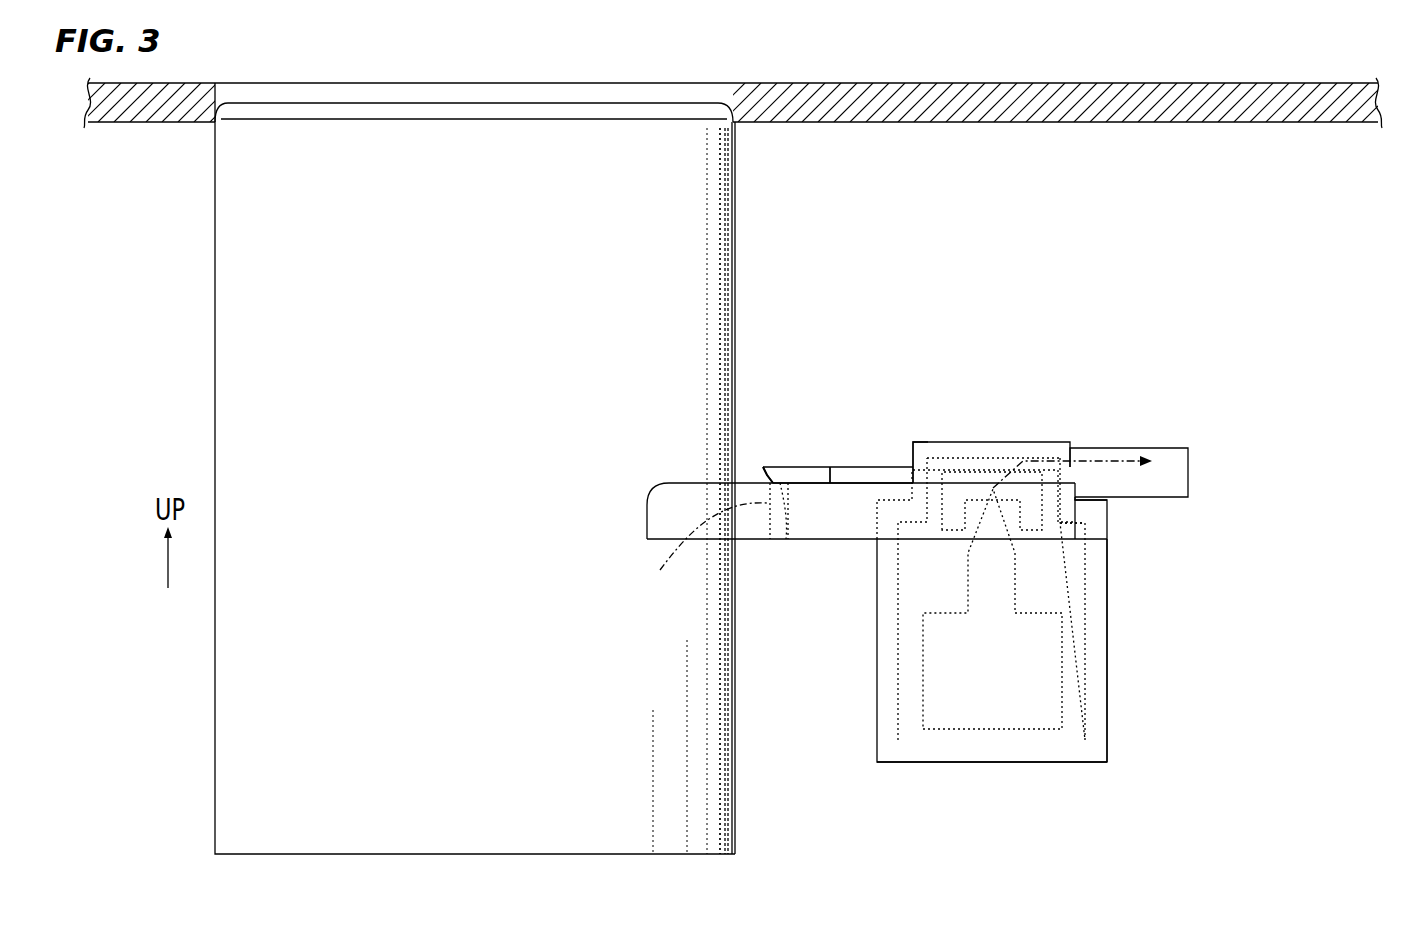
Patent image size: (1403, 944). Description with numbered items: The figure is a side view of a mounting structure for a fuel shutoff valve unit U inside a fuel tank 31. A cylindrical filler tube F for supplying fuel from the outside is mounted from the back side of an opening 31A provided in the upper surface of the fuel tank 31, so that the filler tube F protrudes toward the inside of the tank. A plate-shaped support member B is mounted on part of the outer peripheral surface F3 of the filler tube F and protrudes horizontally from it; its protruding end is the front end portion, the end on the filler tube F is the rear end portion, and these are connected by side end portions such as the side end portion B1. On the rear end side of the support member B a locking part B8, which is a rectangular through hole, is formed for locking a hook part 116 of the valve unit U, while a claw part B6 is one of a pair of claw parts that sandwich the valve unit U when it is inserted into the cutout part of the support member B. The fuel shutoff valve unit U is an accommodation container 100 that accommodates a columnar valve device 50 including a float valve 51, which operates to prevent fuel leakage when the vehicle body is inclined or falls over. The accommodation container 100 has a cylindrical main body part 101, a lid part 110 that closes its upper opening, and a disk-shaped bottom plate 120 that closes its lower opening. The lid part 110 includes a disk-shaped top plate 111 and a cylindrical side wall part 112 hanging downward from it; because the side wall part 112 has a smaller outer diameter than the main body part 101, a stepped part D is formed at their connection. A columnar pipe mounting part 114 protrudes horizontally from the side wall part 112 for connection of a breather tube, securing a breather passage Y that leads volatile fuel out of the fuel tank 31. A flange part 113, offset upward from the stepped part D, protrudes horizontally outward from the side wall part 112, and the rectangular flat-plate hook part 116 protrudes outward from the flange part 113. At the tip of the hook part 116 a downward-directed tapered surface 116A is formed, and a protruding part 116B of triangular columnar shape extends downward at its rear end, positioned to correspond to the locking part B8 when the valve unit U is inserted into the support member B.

The fuel tank 31 is at (1040, 83).
The opening 31A is at (497, 83).
The filler tube F is at (756, 238).
The outer peripheral surface F3 is at (713, 314).
The support member B is at (830, 558).
The locking part B8 is at (697, 551).
The side end portion B1 is at (845, 497).
The claw part B6 is at (1065, 447).
The hook part 116 is at (788, 467).
The tapered surface 116A is at (767, 473).
The protruding part 116B is at (781, 542).
The flange part 113 is at (890, 475).
The side wall part 112 is at (928, 444).
The lid part 110 is at (981, 432).
The top plate 111 is at (1023, 442).
The breather passage Y is at (1105, 448).
The pipe mounting part 114 is at (1188, 486).
The stepped part D is at (1090, 492).
The accommodation container 100 is at (1124, 660).
The main body part 101 is at (1108, 738).
The bottom plate 120 is at (1043, 763).
The fuel shutoff valve unit U is at (929, 788).
The valve device 50 is at (897, 722).
The float valve 51 is at (921, 680).